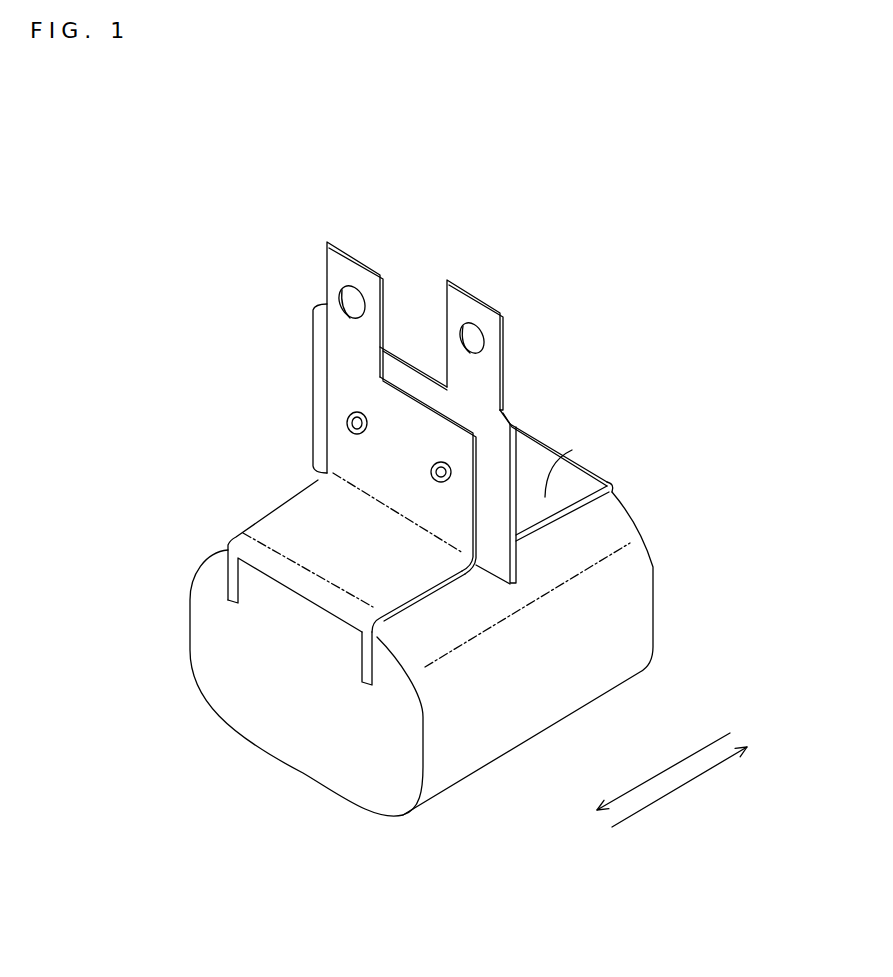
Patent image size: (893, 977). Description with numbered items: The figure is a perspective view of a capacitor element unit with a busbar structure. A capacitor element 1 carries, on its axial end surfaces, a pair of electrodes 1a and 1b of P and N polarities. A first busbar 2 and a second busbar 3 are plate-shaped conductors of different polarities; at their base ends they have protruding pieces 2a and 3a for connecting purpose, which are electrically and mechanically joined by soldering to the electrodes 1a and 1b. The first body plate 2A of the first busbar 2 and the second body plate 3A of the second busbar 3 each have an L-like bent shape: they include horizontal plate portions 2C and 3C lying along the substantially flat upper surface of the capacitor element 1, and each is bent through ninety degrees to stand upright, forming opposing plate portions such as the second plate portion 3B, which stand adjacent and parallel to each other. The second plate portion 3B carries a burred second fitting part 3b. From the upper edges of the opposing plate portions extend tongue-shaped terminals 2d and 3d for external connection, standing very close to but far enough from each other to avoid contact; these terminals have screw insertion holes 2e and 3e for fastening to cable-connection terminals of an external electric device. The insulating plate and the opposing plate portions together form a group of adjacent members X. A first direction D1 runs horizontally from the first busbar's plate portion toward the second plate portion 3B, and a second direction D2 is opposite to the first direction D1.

The group of adjacent members X is at (452, 262).
The capacitor element 1 is at (635, 627).
The electrode 1a is at (647, 538).
The electrode 1b is at (290, 712).
The first busbar 2 is at (557, 437).
The first body plate 2A is at (527, 427).
The horizontal plate portion 2C is at (565, 455).
The protruding piece 2a is at (612, 490).
The tongue-shaped terminal 2d is at (478, 297).
The screw insertion hole 2e is at (473, 337).
The second busbar 3 is at (280, 480).
The second body plate 3A is at (265, 513).
The second plate portion 3B is at (353, 390).
The horizontal plate portion 3C is at (425, 565).
The protruding piece 3a is at (230, 588).
The second fitting part 3b is at (438, 464).
The tongue-shaped terminal 3d is at (355, 262).
The screw insertion hole 3e is at (345, 295).
The first direction D1 is at (644, 783).
The second direction D2 is at (699, 781).